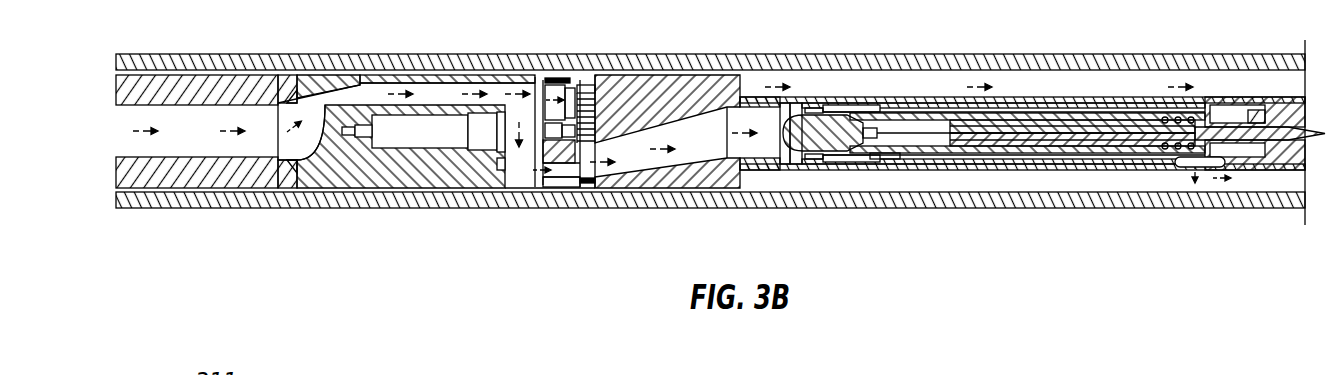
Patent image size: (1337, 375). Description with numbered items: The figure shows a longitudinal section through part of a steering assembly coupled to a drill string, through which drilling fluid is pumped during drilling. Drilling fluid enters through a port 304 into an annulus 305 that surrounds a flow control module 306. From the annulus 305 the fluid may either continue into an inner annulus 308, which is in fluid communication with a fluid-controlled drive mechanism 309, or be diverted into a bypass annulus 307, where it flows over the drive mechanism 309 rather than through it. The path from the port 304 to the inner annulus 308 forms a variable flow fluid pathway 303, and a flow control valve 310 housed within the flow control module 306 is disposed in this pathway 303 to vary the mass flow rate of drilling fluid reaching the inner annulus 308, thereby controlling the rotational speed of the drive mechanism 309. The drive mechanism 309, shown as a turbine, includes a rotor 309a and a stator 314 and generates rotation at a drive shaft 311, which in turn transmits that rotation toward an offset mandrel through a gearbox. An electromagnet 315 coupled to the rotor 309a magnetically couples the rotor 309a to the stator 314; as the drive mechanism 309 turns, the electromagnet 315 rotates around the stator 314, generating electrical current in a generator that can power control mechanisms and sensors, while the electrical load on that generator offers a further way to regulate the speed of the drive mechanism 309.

The variable flow fluid pathway 303 is at (560, 180).
The port 304 is at (330, 100).
The annulus 305 is at (432, 92).
The flow control module 306 is at (420, 140).
The bypass annulus 307 is at (555, 100).
The inner annulus 308 is at (697, 148).
The fluid-controlled drive mechanism 309 is at (905, 105).
The rotor 309a is at (1048, 163).
The flow control valve 310 is at (585, 182).
The drive shaft 311 is at (1222, 135).
The stator 314 is at (915, 160).
The electromagnet 315 is at (883, 163).